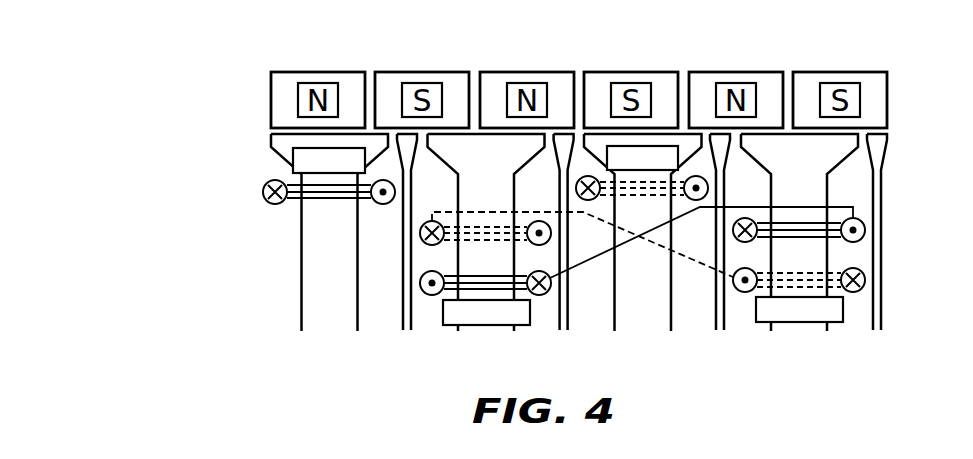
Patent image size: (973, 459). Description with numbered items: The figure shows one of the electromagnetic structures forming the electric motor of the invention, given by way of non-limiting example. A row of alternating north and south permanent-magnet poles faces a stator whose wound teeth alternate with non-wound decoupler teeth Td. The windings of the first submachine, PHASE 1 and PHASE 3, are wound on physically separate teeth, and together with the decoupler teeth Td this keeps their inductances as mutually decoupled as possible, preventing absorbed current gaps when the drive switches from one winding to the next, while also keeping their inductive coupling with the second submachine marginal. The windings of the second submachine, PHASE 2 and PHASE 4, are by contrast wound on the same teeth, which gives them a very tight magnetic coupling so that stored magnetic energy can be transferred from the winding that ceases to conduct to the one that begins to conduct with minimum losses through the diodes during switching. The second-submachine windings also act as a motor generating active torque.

The decoupler teeth Td is at (917, 307).
The PHASE 1 winding PHASE 1 is at (296, 161).
The PHASE 2 winding PHASE 2 is at (803, 313).
The PHASE 3 winding PHASE 3 is at (642, 150).
The PHASE 4 winding PHASE 4 is at (480, 325).